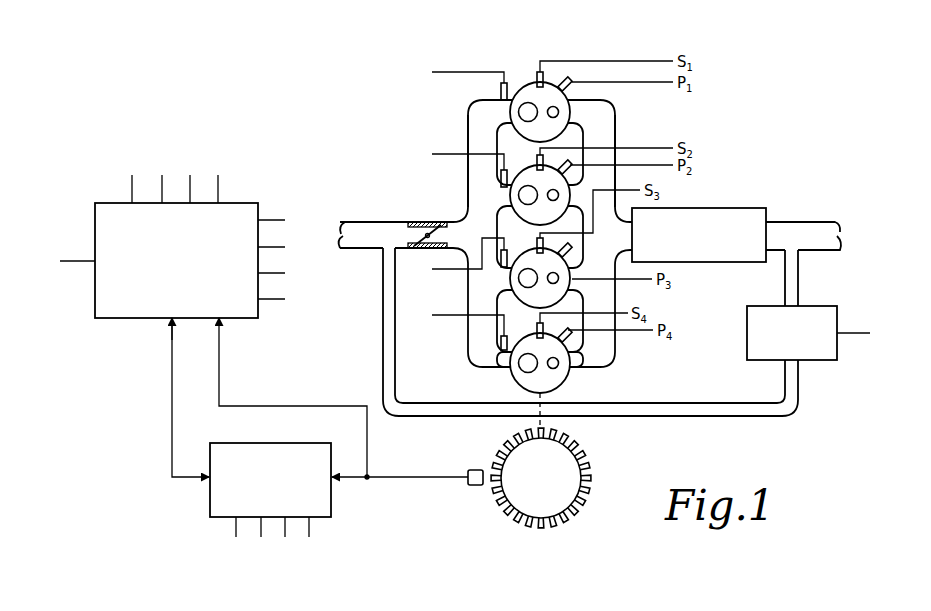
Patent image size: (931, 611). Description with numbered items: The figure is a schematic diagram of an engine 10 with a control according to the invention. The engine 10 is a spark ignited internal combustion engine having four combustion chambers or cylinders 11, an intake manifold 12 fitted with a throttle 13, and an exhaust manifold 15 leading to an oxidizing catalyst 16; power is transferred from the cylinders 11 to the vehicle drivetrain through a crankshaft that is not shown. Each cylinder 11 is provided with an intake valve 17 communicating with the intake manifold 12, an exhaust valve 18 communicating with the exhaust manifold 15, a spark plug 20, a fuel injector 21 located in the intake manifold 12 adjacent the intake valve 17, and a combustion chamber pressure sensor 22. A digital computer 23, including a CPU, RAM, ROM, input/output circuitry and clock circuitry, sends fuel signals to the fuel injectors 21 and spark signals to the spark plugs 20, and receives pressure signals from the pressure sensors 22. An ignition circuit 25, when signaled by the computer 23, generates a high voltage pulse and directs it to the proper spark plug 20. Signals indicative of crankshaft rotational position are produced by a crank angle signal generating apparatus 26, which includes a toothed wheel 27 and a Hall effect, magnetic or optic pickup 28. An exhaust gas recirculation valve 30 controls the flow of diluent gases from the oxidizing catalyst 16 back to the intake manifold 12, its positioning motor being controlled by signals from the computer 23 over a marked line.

The engine 10 is at (523, 50).
The cylinders 11 is at (523, 128).
The intake manifold 12 is at (478, 118).
The throttle 13 is at (422, 220).
The exhaust manifold 15 is at (598, 133).
The oxidizing catalyst 16 is at (737, 208).
The intake valve 17 is at (526, 103).
The exhaust valve 18 is at (558, 116).
The spark plug 20 is at (539, 72).
The fuel injector 21 is at (500, 90).
The combustion chamber pressure sensor 22 is at (572, 86).
The computer 23 is at (235, 203).
The ignition circuit 25 is at (215, 500).
The crank angle signal generating apparatus 26 is at (502, 530).
The toothed wheel 27 is at (552, 492).
The pickup 28 is at (474, 486).
The EGR valve 30 is at (820, 306).